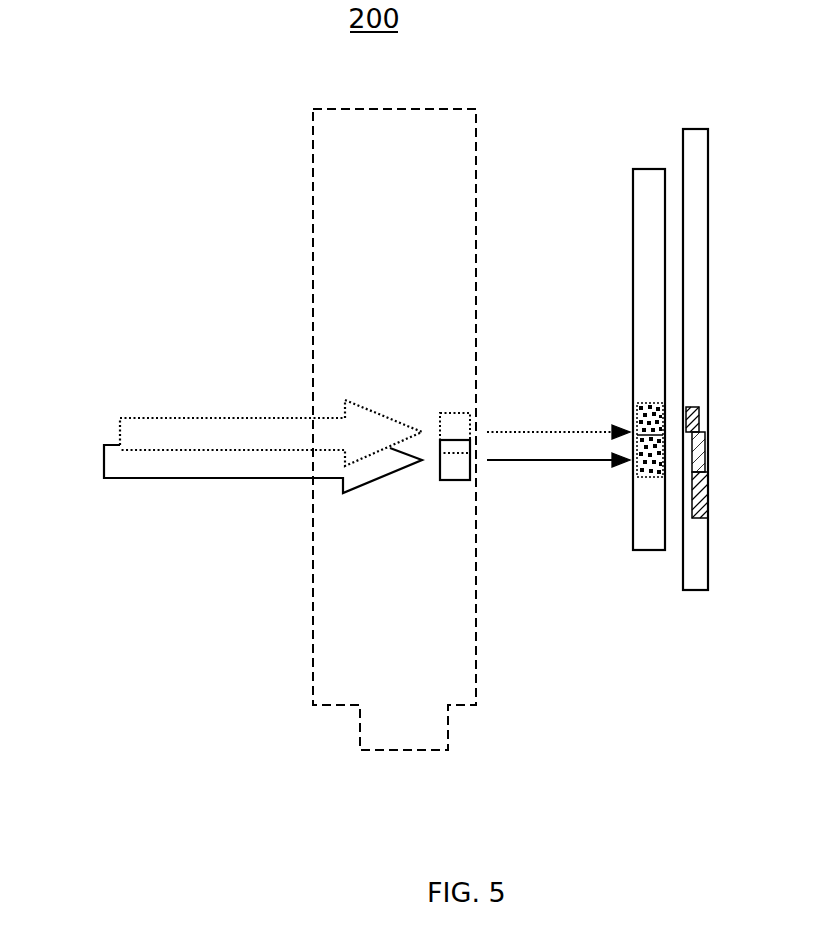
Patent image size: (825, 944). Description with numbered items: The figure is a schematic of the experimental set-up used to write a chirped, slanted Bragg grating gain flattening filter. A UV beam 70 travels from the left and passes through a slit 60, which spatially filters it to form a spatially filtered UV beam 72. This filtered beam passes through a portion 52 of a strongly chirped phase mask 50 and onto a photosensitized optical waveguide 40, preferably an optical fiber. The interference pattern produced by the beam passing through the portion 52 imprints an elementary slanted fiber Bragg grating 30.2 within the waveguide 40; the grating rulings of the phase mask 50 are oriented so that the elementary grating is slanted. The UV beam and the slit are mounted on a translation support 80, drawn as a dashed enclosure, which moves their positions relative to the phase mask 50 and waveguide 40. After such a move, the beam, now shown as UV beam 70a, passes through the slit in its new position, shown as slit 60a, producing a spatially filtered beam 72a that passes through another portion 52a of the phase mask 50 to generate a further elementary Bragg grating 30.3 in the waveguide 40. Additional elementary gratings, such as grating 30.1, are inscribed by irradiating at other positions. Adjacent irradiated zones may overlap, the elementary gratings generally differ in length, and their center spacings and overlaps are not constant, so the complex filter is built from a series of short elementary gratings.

The translation support 80 is at (312, 132).
The UV beam 70 is at (140, 480).
The UV beam 70a is at (136, 418).
The slit 60 is at (455, 480).
The slit 60a is at (455, 413).
The spatially filtered UV beam 72 is at (565, 470).
The spatially filtered beam 72a is at (557, 428).
The strongly chirped phase mask 50 is at (640, 169).
The portion of the phase mask 52 is at (640, 470).
The portion of the phase mask 52a is at (640, 415).
The photosensitized optical waveguide 40 is at (694, 129).
The elementary fiber Bragg grating 30.1 is at (697, 532).
The elementary slanted fiber Bragg grating 30.2 is at (705, 438).
The elementary Bragg grating 30.3 is at (697, 396).